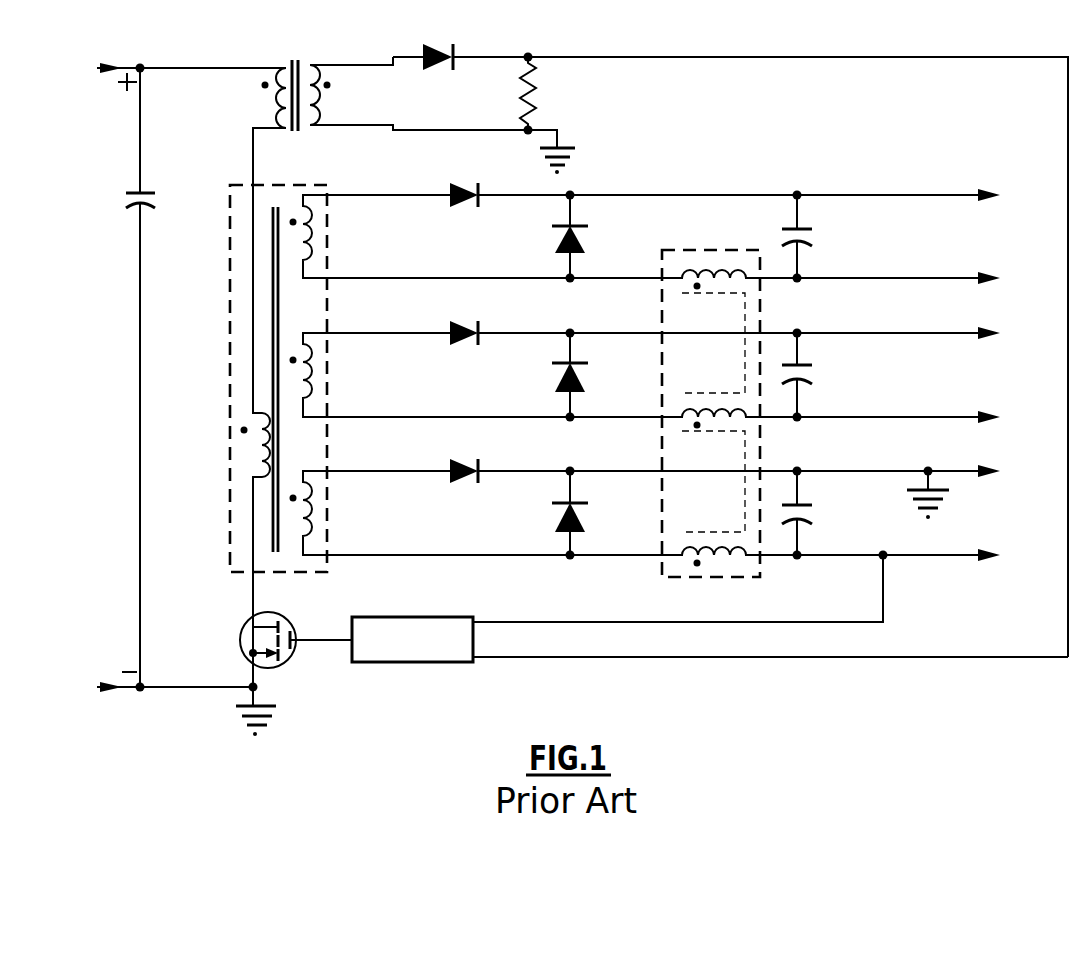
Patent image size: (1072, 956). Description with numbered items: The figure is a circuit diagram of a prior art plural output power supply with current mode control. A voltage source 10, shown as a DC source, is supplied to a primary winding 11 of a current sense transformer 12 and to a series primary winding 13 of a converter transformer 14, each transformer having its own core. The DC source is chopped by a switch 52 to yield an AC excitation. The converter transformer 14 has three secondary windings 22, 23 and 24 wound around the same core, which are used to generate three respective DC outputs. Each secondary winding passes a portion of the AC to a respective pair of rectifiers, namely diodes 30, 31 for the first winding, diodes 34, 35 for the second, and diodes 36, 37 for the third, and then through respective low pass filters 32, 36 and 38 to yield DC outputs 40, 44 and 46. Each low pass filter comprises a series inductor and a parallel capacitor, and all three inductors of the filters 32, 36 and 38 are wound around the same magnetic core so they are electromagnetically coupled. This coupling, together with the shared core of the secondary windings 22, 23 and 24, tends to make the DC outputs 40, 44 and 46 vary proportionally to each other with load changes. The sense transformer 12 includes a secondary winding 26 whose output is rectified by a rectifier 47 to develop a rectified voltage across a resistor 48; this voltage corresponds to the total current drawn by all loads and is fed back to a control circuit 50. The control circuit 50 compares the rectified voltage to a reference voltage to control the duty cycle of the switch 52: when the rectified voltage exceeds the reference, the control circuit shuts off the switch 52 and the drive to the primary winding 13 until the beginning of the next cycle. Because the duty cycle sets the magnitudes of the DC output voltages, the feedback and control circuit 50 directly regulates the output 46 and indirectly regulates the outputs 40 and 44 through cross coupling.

The voltage source 10 is at (112, 64).
The primary winding 11 is at (277, 95).
The current sense transformer 12 is at (357, 106).
The series primary winding 13 is at (258, 470).
The converter transformer 14 is at (372, 398).
The secondary winding 22 is at (317, 219).
The secondary winding 23 is at (317, 357).
The secondary winding 24 is at (317, 494).
The secondary winding 26 is at (320, 96).
The rectifier 30 is at (448, 190).
The rectifier 31 is at (557, 233).
The low pass filter 32 is at (808, 283).
The rectifier 34 is at (448, 328).
The rectifier 35 is at (557, 370).
The rectifier / low pass filter 36 is at (448, 466).
The rectifier 37 is at (557, 509).
The low pass filter 38 is at (808, 561).
The DC output 40 is at (940, 192).
The DC output 44 is at (960, 332).
The DC output 46 is at (960, 470).
The rectifier 47 is at (432, 76).
The resistor 48 is at (539, 98).
The control circuit 50 is at (412, 662).
The switch 52 is at (285, 664).